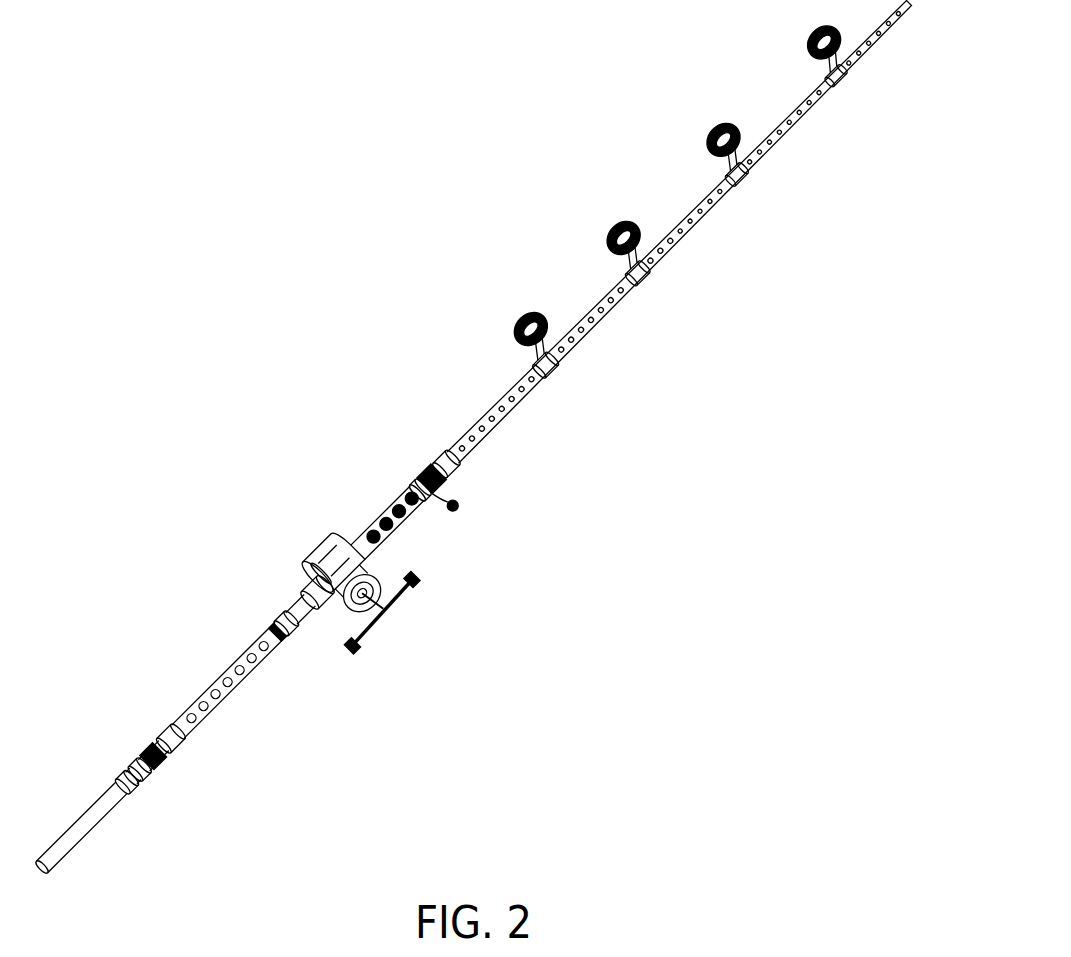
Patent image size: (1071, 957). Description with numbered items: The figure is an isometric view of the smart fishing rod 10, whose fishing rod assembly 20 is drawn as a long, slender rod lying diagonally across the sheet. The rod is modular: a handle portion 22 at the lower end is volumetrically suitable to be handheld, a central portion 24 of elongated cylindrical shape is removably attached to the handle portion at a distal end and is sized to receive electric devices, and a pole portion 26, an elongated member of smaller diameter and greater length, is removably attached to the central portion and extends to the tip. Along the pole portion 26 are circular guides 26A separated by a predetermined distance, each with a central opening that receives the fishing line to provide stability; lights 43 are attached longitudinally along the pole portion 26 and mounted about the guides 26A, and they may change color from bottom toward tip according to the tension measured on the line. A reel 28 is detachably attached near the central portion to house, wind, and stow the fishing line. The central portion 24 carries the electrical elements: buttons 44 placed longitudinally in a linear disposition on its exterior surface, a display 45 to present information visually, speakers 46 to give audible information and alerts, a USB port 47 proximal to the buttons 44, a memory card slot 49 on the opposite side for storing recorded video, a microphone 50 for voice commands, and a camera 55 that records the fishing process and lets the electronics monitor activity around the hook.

The smart fishing rod 10 is at (424, 140).
The fishing rod assembly 20 is at (486, 401).
The handle portion 22 is at (90, 837).
The central portion 24 is at (400, 533).
The pole portion 26 is at (706, 190).
The guides 26A is at (610, 228).
The reel 28 is at (382, 605).
The lights 43 is at (682, 242).
The buttons 44 is at (217, 678).
The display 45 is at (290, 603).
The speakers 46 is at (400, 497).
The USB port 47 is at (173, 730).
The memory card slot 49 is at (267, 632).
The microphone 50 is at (352, 548).
The camera 55 is at (459, 509).